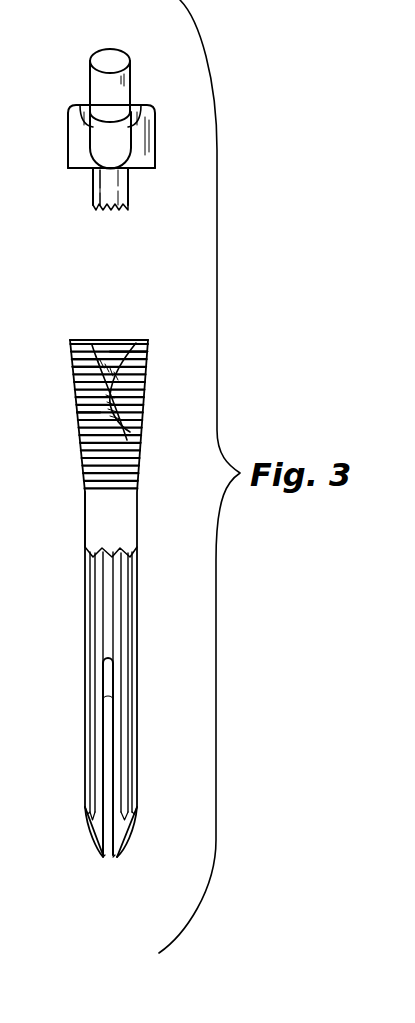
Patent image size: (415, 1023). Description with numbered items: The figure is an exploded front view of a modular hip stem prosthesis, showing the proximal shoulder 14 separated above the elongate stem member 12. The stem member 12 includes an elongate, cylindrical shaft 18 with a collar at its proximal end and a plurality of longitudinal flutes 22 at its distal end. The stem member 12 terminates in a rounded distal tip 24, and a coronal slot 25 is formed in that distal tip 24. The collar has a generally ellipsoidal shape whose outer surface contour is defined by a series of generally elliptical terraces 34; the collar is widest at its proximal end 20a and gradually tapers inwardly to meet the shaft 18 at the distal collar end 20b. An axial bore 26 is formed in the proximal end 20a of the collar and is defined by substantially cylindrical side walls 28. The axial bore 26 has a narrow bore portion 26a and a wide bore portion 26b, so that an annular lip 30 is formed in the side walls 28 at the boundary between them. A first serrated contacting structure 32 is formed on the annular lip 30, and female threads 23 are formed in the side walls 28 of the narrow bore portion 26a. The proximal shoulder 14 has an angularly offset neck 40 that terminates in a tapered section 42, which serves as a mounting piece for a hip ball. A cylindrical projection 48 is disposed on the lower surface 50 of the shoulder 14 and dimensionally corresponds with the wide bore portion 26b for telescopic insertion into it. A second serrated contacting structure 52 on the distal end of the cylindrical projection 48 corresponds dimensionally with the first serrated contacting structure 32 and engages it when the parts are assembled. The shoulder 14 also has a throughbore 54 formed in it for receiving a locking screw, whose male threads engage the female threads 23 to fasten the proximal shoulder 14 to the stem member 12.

The stem member 12 is at (150, 513).
The proximal shoulder 14 is at (155, 147).
The cylindrical shaft 18 is at (85, 525).
The proximal end of the collar 20a is at (78, 338).
The distal collar end 20b is at (135, 490).
The longitudinal flutes 22 is at (122, 695).
The female threads 23 is at (140, 408).
The distal tip 24 is at (128, 837).
The coronal slot 25 is at (108, 850).
The axial bore 26 is at (115, 338).
The narrow bore portion 26a is at (133, 440).
The wide bore portion 26b is at (123, 341).
The side walls 28 is at (105, 338).
The annular lip 30 is at (92, 368).
The first serrated contacting structure 32 is at (85, 354).
The elliptical terraces 34 is at (75, 412).
The angularly offset neck 40 is at (118, 112).
The tapered section 42 is at (132, 76).
The cylindrical projection 48 is at (127, 186).
The lower surface 50 is at (78, 168).
The second serrated contacting structure 52 is at (108, 210).
The throughbore 54 is at (107, 188).